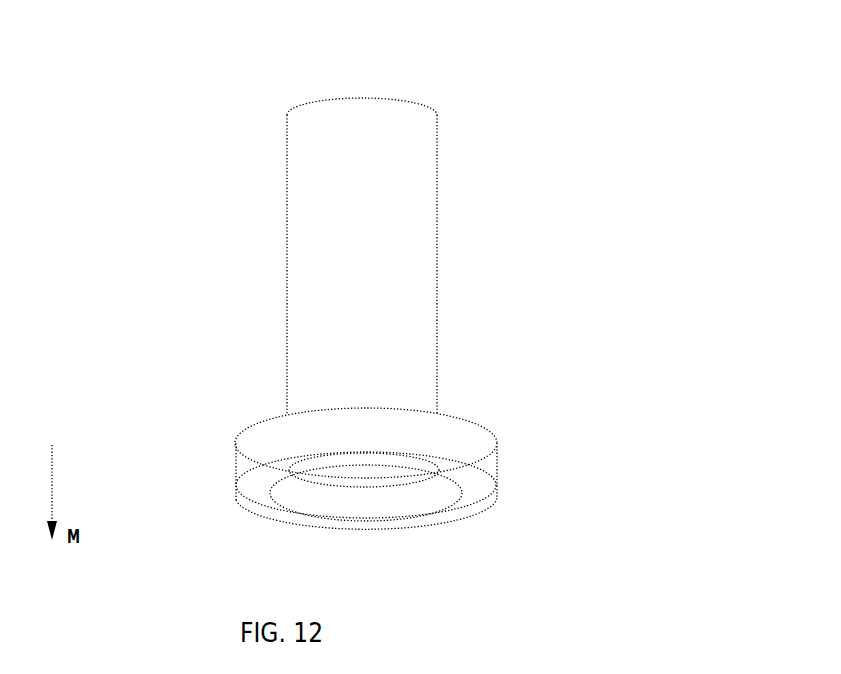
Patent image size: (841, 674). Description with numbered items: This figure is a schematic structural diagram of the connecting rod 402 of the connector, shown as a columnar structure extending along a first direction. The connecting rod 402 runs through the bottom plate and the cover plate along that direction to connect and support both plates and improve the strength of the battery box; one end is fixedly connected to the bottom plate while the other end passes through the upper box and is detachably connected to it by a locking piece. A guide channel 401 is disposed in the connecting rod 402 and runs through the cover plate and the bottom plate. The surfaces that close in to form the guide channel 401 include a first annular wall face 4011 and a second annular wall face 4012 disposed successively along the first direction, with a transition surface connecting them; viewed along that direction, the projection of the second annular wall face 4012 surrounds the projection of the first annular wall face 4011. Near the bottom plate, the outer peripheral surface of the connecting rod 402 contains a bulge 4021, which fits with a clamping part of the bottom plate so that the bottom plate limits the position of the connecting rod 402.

The connecting rod 402 is at (388, 29).
The bulge 4021 is at (265, 450).
The guide channel 401 is at (366, 472).
The first annular wall face 4011 is at (328, 468).
The second annular wall face 4012 is at (395, 510).